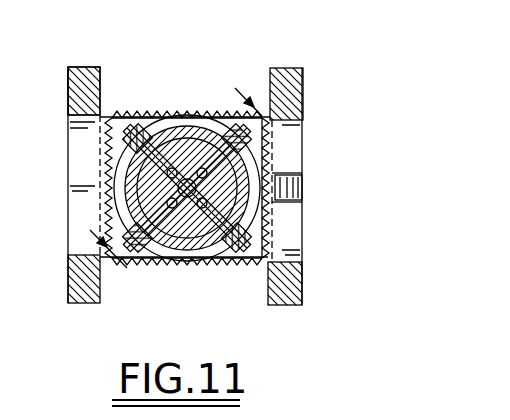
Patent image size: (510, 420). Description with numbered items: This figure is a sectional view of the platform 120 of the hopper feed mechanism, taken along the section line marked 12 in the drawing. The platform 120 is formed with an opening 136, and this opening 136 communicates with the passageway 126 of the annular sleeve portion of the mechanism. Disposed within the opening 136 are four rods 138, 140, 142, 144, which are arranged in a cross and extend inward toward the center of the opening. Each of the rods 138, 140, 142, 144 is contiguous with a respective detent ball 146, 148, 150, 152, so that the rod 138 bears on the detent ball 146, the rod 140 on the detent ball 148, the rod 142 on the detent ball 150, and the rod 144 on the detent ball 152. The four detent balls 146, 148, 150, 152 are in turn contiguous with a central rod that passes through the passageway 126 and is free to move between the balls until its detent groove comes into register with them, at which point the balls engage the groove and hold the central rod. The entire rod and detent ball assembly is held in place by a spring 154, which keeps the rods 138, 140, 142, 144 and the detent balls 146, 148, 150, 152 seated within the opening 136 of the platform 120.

The section line 12- 12 is at (196, 198).
The platform 120 is at (340, 250).
The passageway 126 is at (200, 115).
The opening 136 is at (107, 117).
The rod 138 is at (178, 115).
The rod 140 is at (125, 200).
The rod 142 is at (203, 262).
The rod 144 is at (270, 168).
The detent ball 146 is at (105, 150).
The detent ball 148 is at (148, 276).
The detent ball 150 is at (293, 203).
The detent ball 152 is at (222, 115).
The spring 154 is at (153, 115).